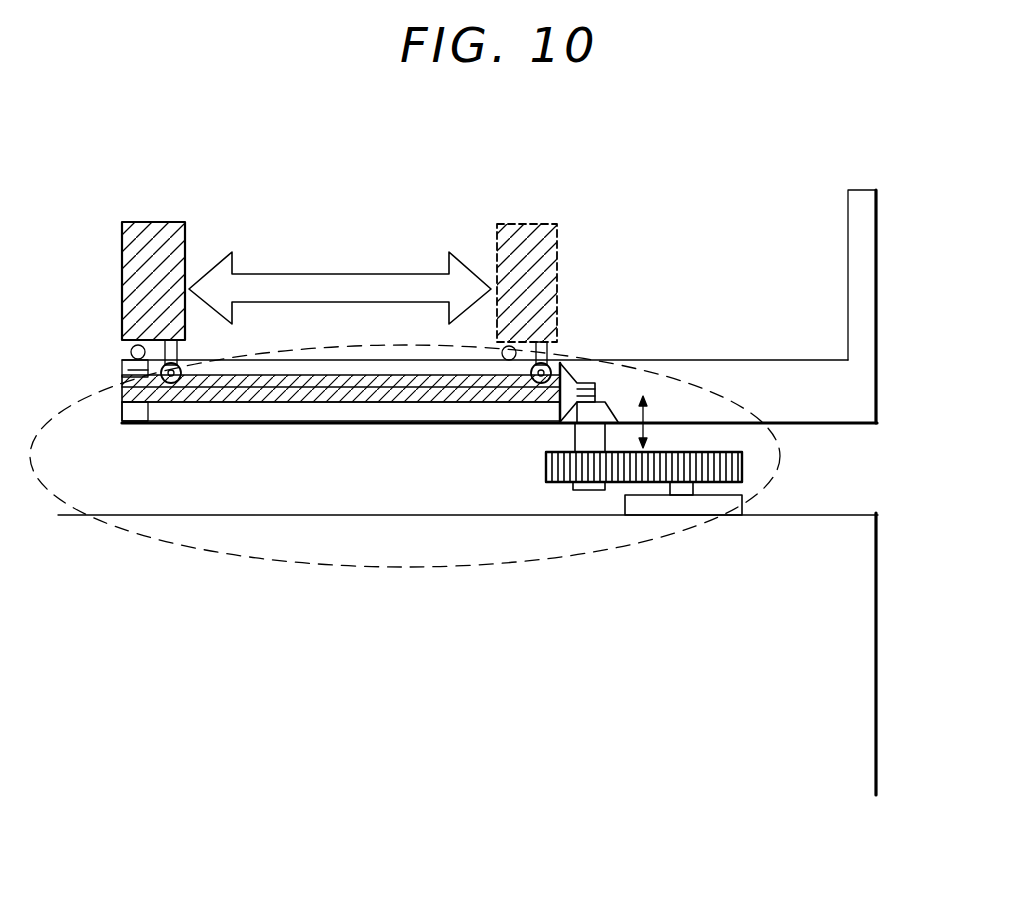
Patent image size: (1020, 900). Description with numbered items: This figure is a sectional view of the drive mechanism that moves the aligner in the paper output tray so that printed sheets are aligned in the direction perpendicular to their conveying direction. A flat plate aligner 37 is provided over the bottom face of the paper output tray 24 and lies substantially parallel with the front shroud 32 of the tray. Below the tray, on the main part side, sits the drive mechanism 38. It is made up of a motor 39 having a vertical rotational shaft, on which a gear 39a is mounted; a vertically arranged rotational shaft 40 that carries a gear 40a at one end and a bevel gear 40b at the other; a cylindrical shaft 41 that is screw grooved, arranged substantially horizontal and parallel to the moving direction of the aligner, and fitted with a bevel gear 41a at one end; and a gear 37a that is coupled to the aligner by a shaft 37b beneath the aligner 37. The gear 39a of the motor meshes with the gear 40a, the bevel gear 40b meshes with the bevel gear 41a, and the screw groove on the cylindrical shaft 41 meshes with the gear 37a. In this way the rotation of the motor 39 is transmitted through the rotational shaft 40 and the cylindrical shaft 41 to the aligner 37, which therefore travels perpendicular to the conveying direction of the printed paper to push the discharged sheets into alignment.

The paper output tray 24 is at (837, 412).
The front shroud 32 is at (860, 195).
The aligner 37 is at (153, 221).
The gear 37a is at (180, 368).
The shaft 37b is at (153, 400).
The drive mechanism 38 is at (430, 552).
The motor 39 is at (708, 508).
The gear 39a is at (715, 452).
The rotational shaft 40 is at (558, 437).
The gear 40a is at (548, 470).
The bevel gear 40b is at (615, 420).
The cylindrical shaft 41 is at (350, 400).
The bevel gear 41a is at (572, 380).